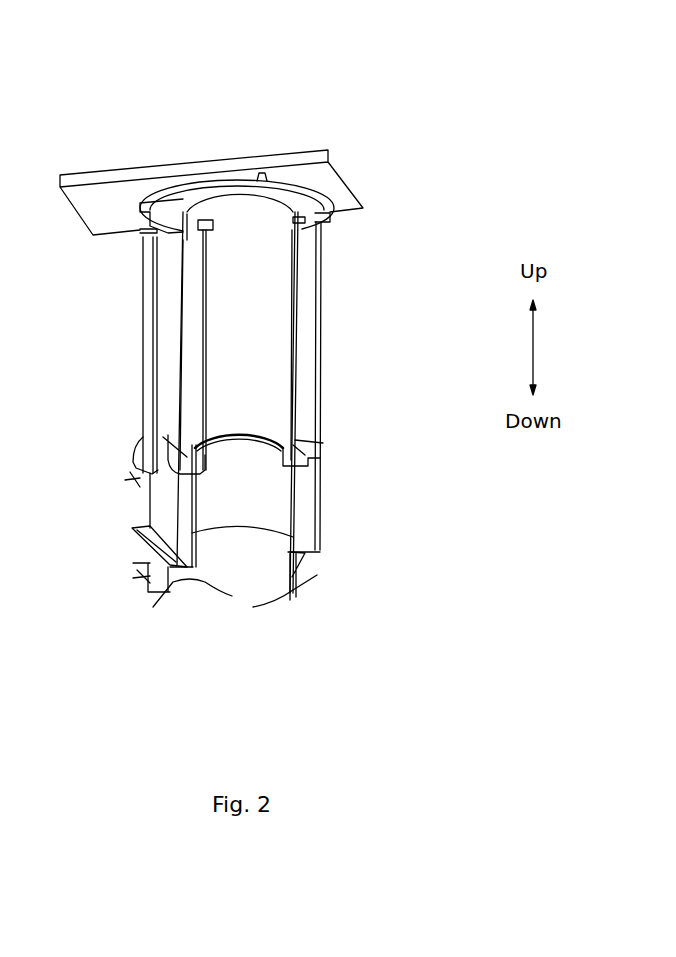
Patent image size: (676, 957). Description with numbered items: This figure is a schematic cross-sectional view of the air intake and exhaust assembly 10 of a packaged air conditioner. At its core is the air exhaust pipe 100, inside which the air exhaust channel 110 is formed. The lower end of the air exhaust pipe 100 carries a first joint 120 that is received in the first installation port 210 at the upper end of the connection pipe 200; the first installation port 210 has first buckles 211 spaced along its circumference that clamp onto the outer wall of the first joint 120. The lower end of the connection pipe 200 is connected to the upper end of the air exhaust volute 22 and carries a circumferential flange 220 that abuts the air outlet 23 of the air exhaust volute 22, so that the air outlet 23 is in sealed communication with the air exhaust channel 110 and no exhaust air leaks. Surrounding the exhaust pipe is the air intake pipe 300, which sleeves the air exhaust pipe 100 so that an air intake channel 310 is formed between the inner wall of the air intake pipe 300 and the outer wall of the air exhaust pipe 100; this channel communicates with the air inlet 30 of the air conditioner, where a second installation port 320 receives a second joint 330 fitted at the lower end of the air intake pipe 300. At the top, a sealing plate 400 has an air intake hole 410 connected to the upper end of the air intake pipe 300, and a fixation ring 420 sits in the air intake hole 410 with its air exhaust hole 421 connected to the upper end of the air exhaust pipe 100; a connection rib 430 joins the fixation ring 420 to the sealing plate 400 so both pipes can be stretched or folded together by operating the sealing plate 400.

The air intake and exhaust assembly 10 is at (195, 57).
The sealing plate 400 is at (327, 178).
The air intake hole 410 is at (313, 200).
The fixation ring 420 is at (183, 187).
The air exhaust hole 421 is at (270, 187).
The connection rib 430 is at (190, 183).
The air exhaust pipe 100 is at (295, 338).
The air exhaust channel 110 is at (280, 290).
The first joint 120 is at (300, 443).
The connection pipe 200 is at (290, 512).
The first installation port 210 is at (303, 452).
The first buckle 211 is at (147, 437).
The flange 220 is at (303, 557).
The air intake pipe 300 is at (158, 363).
The air intake channel 310 is at (165, 310).
The second installation port 320 is at (140, 468).
The second joint 330 is at (138, 455).
The air inlet 30 is at (150, 522).
The air exhaust volute 22 is at (300, 585).
The air outlet 23 is at (242, 530).